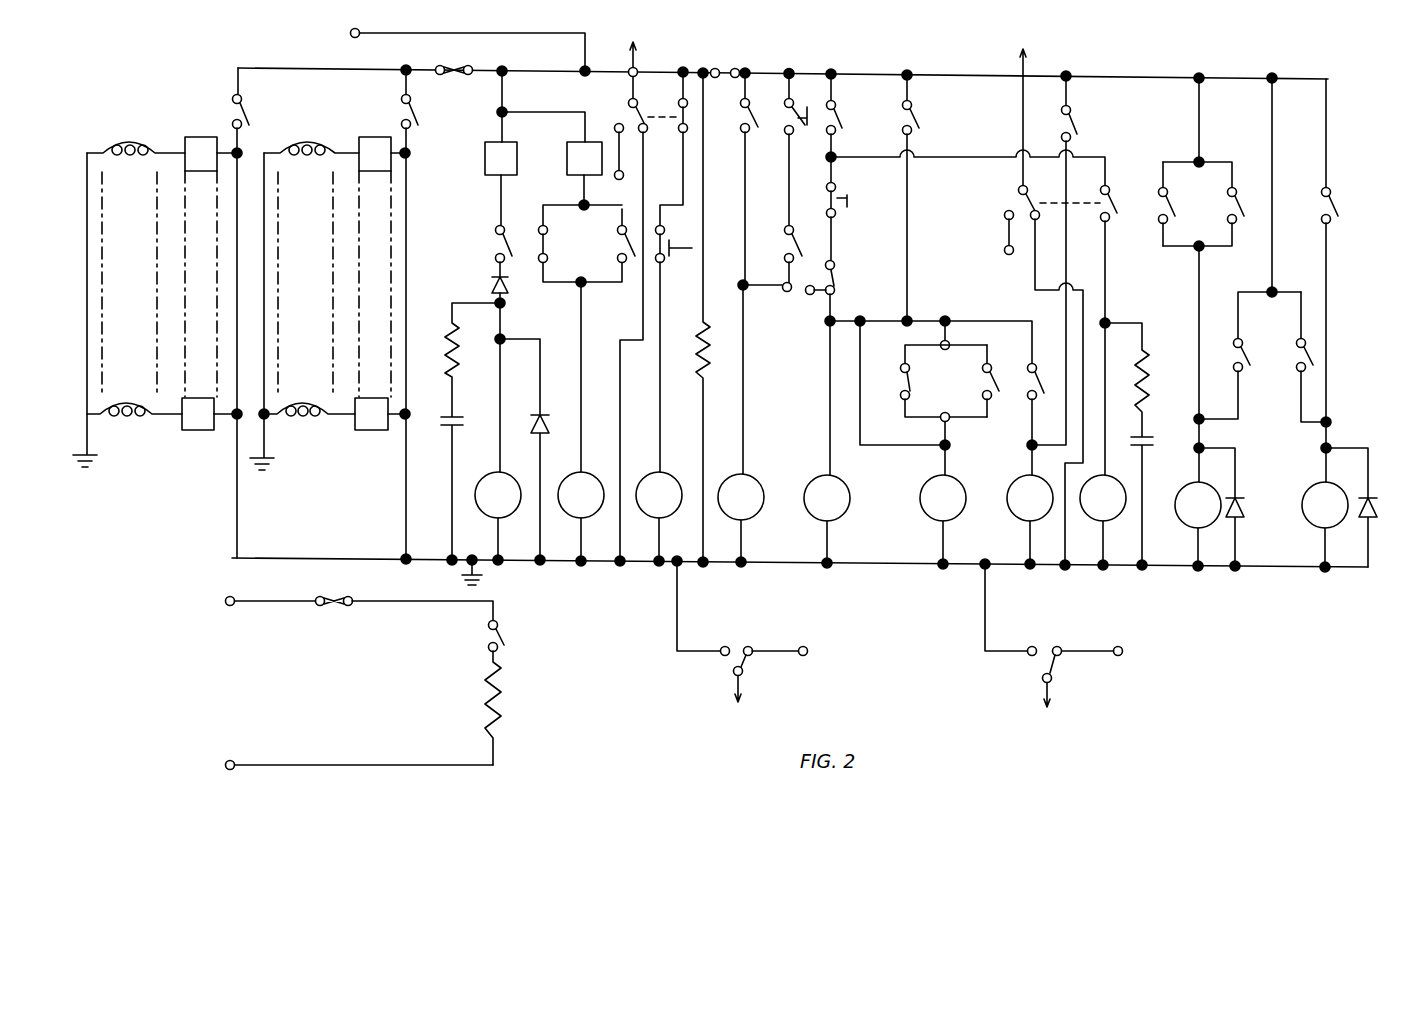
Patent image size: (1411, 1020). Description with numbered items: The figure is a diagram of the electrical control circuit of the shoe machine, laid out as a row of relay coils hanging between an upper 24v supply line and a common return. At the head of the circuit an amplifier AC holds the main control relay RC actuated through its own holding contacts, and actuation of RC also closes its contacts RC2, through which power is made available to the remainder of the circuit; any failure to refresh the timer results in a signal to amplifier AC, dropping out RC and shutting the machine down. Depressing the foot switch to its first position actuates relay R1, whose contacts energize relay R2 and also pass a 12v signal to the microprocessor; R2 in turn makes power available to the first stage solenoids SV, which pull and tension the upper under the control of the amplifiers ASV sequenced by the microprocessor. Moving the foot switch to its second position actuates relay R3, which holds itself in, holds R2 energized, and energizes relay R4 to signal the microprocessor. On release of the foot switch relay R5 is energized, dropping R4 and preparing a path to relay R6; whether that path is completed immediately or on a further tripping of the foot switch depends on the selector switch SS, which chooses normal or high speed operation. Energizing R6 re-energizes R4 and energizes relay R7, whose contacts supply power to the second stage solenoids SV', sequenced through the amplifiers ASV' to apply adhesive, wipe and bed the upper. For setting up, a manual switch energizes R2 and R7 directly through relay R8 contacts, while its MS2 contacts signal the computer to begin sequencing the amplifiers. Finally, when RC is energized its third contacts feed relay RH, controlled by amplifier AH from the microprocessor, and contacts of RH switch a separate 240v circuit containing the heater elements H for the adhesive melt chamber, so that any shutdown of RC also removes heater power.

The 24 volt supply 24v is at (765, 54).
The solenoids SV is at (129, 292).
The amplifiers ASV is at (212, 283).
The solenoids SV' is at (304, 293).
The amplifiers ASV' is at (382, 283).
The amplifier AH is at (501, 120).
The amplifier AC is at (552, 135).
The relay RH is at (495, 418).
The main control relay RC is at (582, 380).
The 12 volt signal terminal 12v is at (881, 420).
The relay R1 is at (659, 411).
The contacts RC/2 RC2 is at (725, 58).
The relay R6 is at (741, 421).
The selector switch SS is at (786, 115).
The relay R3 is at (965, 440).
The relay R4 is at (910, 440).
The relay R5 is at (1030, 502).
The manual switch contacts 2 MS2 is at (1029, 307).
The relay R2 is at (1209, 406).
The relay R7 is at (1339, 492).
The 240 volt circuit 240v is at (343, 683).
The heater elements H is at (503, 708).